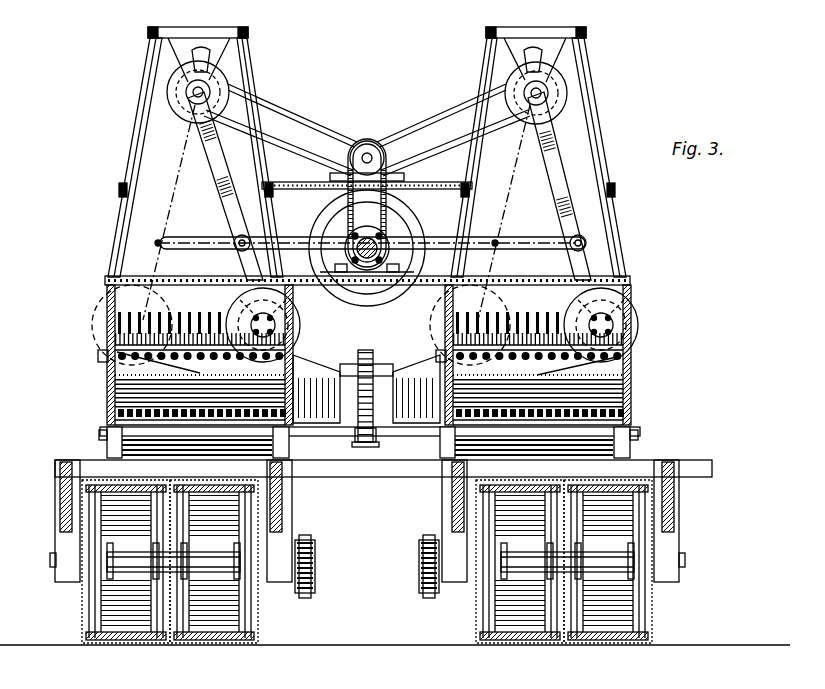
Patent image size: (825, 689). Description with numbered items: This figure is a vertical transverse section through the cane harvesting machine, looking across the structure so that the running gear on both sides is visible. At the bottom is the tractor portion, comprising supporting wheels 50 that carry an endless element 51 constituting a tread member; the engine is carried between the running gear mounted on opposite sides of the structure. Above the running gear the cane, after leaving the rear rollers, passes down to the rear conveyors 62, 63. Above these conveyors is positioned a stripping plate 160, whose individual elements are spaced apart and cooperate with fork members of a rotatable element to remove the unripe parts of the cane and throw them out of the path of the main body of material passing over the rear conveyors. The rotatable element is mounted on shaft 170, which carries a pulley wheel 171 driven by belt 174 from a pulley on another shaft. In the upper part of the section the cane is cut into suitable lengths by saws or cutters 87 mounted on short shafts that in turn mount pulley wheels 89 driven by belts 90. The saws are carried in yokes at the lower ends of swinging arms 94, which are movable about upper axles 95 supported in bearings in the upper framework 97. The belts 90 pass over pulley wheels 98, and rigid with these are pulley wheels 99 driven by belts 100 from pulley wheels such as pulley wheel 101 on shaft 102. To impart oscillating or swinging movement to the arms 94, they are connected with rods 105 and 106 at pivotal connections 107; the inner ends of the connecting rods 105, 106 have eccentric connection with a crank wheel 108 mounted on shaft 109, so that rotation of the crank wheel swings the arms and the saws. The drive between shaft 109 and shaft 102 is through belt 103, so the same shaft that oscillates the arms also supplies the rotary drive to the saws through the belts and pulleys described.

The supporting wheels 50 is at (83, 605).
The endless element 51 is at (207, 641).
The rear conveyor 62 is at (640, 440).
The rear conveyor 63 is at (107, 441).
The saws or cutters 87 is at (300, 333).
The pulley wheels 89 is at (236, 303).
The belts 90 is at (222, 211).
The swinging arms 94 is at (220, 166).
The upper axles 95 is at (187, 88).
The upper framework 97 is at (151, 57).
The pulley wheels 98 is at (168, 97).
The pulley wheels 99 is at (232, 89).
The belts 100 is at (333, 128).
The pulley wheel 101 is at (386, 140).
The shaft 102 is at (352, 152).
The belt 103 is at (407, 186).
The connecting rod 105 is at (515, 251).
The connecting rod 106 is at (317, 227).
The pivotal connection 107 is at (236, 248).
The crank wheel 108 is at (367, 297).
The shaft 109 is at (382, 236).
The stripping plate 160 is at (115, 332).
The shaft 170 is at (347, 376).
The pulley wheel 171 is at (360, 362).
The belt 174 is at (374, 437).